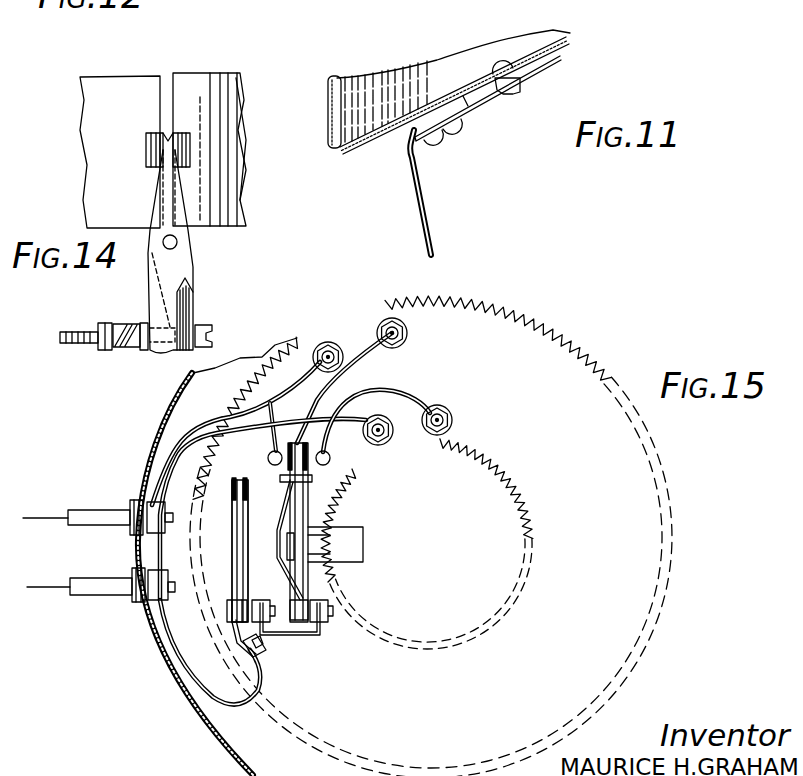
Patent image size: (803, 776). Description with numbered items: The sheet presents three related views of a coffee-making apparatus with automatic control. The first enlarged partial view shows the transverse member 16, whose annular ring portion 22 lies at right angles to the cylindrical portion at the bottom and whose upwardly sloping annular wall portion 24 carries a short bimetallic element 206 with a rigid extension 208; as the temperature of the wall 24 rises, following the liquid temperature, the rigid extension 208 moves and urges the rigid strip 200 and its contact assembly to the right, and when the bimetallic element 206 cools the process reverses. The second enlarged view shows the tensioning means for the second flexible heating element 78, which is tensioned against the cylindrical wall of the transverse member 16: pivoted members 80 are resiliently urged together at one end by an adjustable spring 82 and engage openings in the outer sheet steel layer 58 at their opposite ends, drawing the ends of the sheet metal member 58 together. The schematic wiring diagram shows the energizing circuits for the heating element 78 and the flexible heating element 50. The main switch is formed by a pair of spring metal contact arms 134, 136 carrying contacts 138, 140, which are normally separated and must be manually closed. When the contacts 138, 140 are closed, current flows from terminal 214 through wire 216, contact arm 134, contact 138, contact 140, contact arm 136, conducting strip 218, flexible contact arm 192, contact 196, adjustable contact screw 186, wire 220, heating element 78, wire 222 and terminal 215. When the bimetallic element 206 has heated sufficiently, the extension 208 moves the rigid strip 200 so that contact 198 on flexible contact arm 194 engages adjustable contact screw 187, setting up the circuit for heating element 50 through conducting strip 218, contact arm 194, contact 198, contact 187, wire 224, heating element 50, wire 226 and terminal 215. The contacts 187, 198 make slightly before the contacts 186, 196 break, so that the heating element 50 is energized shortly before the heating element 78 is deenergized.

In FIG. 11, the transverse member 16 is at (343, 71).
In FIG. 11, the annular ring portion 22 is at (347, 151).
In FIG. 11, the upwardly sloping annular wall portion 24 is at (463, 96).
In FIG. 11, the bimetallic element 206 is at (468, 106).
In FIG. 15, the bimetallic element 206 is at (365, 532).
In FIG. 11, the rigid extension 208 is at (428, 200).
In FIG. 14, the second flexible heating element 78 is at (240, 75).
In FIG. 15, the second flexible heating element 78 is at (572, 352).
In FIG. 14, the outer layer of sheet steel 58 is at (226, 112).
In FIG. 14, the pivoted members 80 is at (190, 282).
In FIG. 14, the adjustable spring 82 is at (138, 346).
In FIG. 15, the flexible heating element 50 is at (508, 483).
In FIG. 15, the wire 220 is at (352, 360).
In FIG. 15, the wire 222 is at (219, 414).
In FIG. 15, the wire 224 is at (415, 397).
In FIG. 15, the contact 196 is at (298, 396).
In FIG. 15, the contact 198 is at (276, 507).
In FIG. 15, the adjustable contact screw 186 is at (269, 455).
In FIG. 15, the adjustable contact screw 187 is at (331, 458).
In FIG. 15, the contact 140 is at (238, 482).
In FIG. 15, the contact 138 is at (236, 483).
In FIG. 15, the contact arm 136 is at (249, 503).
In FIG. 15, the contact arm 134 is at (233, 558).
In FIG. 15, the flexible contact arm 194 is at (309, 494).
In FIG. 15, the flexible contact arm 192 is at (285, 572).
In FIG. 15, the rigid strip 200 is at (287, 545).
In FIG. 15, the conducting strip 218 is at (291, 637).
In FIG. 15, the wire 216 is at (233, 707).
In FIG. 15, the wire 226 is at (183, 457).
In FIG. 15, the terminal 215 is at (77, 512).
In FIG. 15, the terminal 214 is at (75, 592).